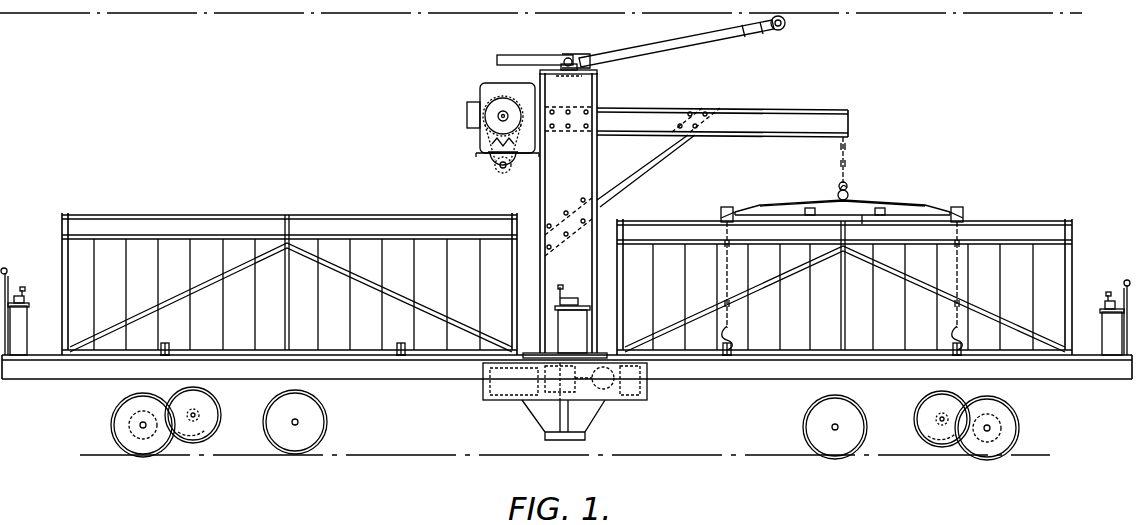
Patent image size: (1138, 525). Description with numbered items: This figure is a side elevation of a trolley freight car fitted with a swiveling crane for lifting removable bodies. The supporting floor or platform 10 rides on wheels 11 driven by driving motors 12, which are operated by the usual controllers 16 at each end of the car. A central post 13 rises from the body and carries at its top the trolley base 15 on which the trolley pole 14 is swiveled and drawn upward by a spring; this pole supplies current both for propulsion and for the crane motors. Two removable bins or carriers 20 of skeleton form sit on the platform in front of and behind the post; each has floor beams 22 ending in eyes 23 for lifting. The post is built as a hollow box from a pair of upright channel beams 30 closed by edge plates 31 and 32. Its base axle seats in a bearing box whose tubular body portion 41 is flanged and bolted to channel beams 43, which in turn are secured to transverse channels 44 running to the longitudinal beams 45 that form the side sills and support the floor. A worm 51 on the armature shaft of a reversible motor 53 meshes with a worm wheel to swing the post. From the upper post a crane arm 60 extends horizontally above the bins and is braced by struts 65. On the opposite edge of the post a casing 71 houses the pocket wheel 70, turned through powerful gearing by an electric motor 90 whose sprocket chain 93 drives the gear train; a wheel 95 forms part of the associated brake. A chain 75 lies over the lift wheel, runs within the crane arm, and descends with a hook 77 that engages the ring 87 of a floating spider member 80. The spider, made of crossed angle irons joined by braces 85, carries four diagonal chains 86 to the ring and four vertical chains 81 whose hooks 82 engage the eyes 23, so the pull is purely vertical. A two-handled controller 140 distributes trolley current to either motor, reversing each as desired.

The supporting floor or platform 10 is at (765, 380).
The wheels 11 is at (137, 446).
The driving motors 12 is at (218, 398).
The central post 13 is at (568, 230).
The trolley pole 14 is at (682, 33).
The trolley base 15 is at (598, 72).
The controllers 16 is at (30, 305).
The removable bins or carriers 20 is at (226, 214).
The floor beams 22 is at (168, 355).
The eyes 23 is at (178, 338).
The upright channel beams 30 is at (565, 215).
The edge plate 31 is at (598, 218).
The edge plate 32 is at (540, 190).
The tubular body portion 41 is at (548, 422).
The channel beams 43 is at (488, 400).
The transverse channels 44 is at (655, 376).
The longitudinal beams 45 is at (857, 385).
The worm 51 is at (545, 376).
The motor 53 is at (612, 383).
The crane arm 60 is at (800, 108).
The struts 65 is at (650, 163).
The pocket wheel 70 is at (535, 78).
The casing 71 is at (490, 82).
The chain 75 is at (850, 146).
The hook 77 is at (838, 182).
The floating spider member 80 is at (905, 205).
The vertical chains 81 is at (727, 282).
The hook 82 is at (735, 336).
The braces 85 is at (862, 224).
The chain 86 is at (810, 204).
The ring 87 is at (850, 193).
The electric motor 90 is at (490, 172).
The sprocket chain 93 is at (480, 141).
The wheel 95 is at (492, 105).
The controller 140 is at (572, 319).